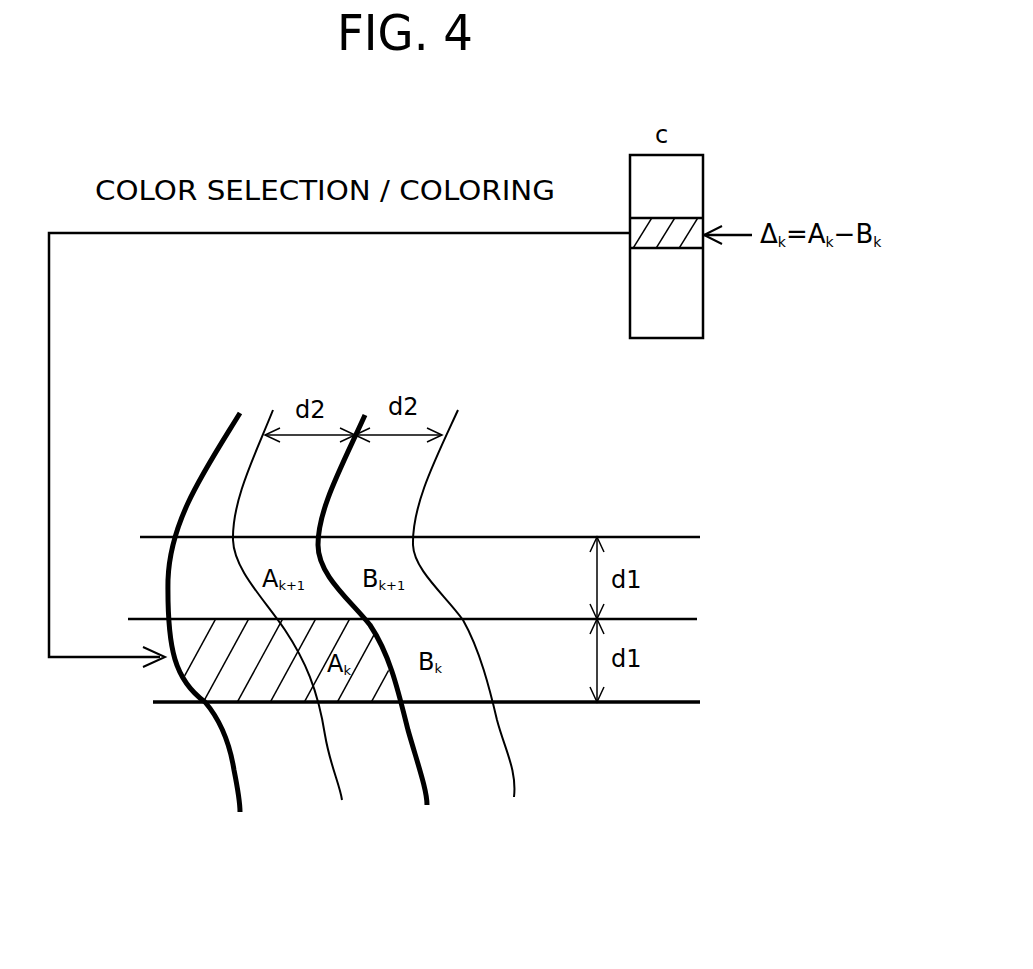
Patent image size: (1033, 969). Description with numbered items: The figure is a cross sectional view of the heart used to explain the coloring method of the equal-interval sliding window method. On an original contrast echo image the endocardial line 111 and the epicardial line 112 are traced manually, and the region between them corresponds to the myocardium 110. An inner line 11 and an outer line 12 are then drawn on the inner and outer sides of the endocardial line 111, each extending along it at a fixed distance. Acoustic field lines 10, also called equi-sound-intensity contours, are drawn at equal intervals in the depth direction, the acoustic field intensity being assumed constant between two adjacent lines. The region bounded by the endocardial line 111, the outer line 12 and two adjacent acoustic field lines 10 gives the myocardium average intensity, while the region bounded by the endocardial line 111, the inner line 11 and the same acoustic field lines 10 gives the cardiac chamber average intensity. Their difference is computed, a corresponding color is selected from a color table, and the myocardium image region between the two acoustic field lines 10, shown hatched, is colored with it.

The acoustic field line 10 is at (444, 617).
The inner line 11 is at (473, 623).
The outer line 12 is at (295, 625).
The myocardium 110 is at (311, 670).
The endocardial line 111 is at (386, 630).
The epicardial line 112 is at (213, 631).